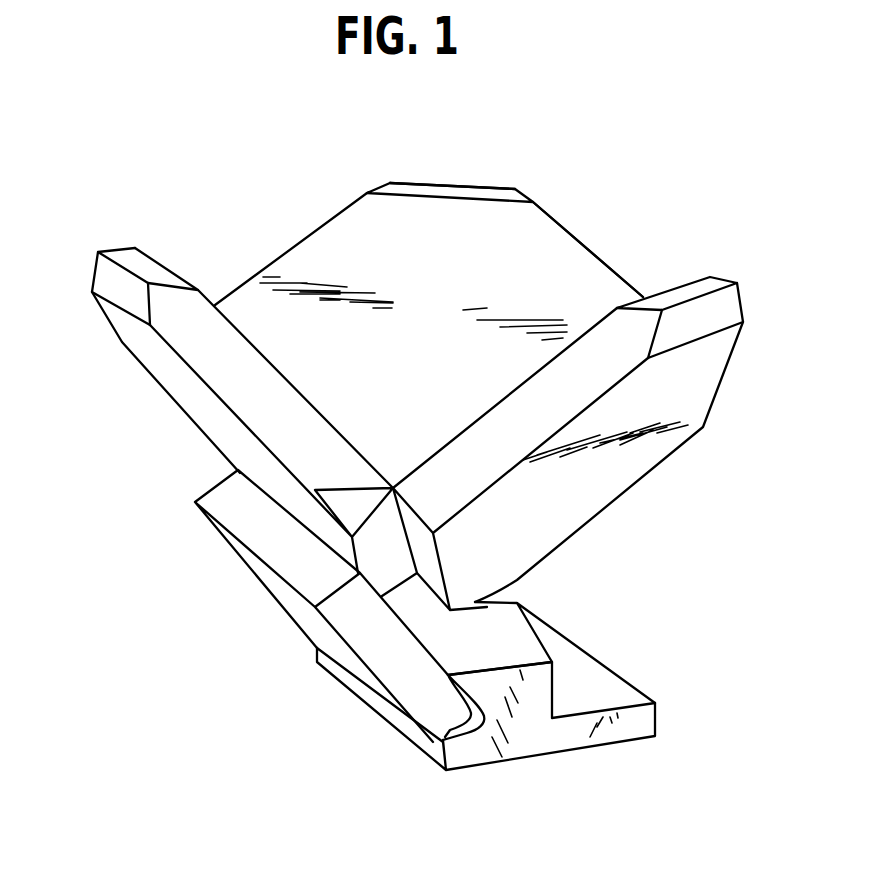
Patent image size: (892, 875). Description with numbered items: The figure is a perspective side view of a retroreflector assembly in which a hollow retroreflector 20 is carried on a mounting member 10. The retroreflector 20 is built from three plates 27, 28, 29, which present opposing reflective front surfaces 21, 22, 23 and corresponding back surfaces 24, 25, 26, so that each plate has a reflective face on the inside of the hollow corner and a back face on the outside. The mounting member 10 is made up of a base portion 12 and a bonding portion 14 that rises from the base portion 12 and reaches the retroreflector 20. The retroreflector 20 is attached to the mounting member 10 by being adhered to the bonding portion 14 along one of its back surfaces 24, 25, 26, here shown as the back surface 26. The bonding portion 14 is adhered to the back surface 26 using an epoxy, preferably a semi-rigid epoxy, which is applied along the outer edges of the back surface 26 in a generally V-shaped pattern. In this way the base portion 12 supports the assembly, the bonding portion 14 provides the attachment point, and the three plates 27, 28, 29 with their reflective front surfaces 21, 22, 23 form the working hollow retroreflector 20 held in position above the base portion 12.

The mounting member 10 is at (481, 650).
The base portion 12 is at (627, 722).
The bonding portion 14 is at (287, 590).
The hollow retroreflector 20 is at (414, 316).
The reflective front surface 21 is at (358, 217).
The reflective front surface 22 is at (580, 333).
The reflective front surface 23 is at (198, 290).
The back surface 24 is at (470, 183).
The back surface 25 is at (713, 357).
The back surface 26 is at (120, 340).
The plate 27 is at (560, 210).
The plate 28 is at (722, 307).
The plate 29 is at (103, 272).